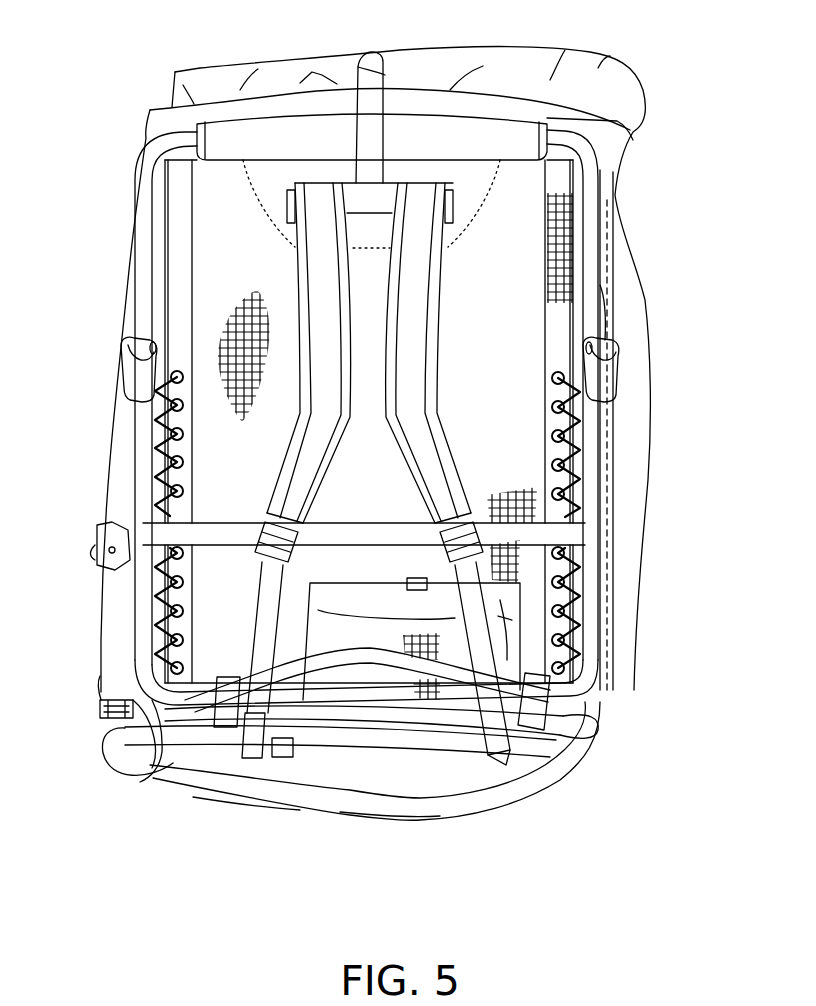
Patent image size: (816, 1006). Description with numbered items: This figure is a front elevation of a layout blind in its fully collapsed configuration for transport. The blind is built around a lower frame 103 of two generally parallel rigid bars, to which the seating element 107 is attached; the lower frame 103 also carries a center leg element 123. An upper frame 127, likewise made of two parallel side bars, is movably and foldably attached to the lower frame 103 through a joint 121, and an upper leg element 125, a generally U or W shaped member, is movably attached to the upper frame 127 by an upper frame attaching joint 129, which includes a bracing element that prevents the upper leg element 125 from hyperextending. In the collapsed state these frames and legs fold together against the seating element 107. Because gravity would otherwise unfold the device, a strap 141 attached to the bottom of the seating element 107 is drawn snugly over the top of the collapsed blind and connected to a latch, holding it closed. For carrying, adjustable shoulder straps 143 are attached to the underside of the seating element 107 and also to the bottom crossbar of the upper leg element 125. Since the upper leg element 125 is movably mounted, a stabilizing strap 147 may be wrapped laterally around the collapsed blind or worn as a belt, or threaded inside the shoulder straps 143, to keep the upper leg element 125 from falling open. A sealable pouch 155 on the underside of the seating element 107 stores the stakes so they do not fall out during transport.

The lower frame 103 is at (597, 744).
The seating element 107 is at (215, 182).
The joint 121 is at (150, 757).
The center leg element 123 is at (520, 787).
The upper leg element 125 is at (603, 433).
The upper frame 127 is at (600, 290).
The upper frame attaching joint 129 is at (606, 386).
The strap 141 is at (387, 73).
The shoulder straps 143 is at (328, 249).
The stabilizing strap 147 is at (137, 733).
The pouch 155 is at (393, 695).